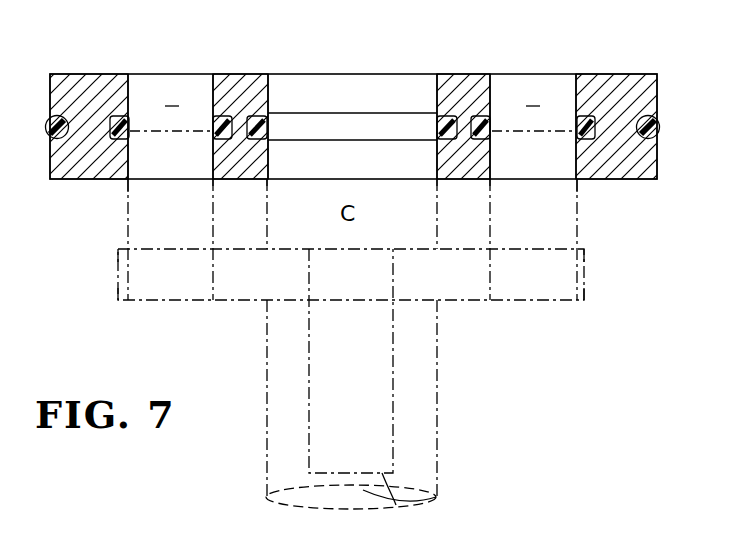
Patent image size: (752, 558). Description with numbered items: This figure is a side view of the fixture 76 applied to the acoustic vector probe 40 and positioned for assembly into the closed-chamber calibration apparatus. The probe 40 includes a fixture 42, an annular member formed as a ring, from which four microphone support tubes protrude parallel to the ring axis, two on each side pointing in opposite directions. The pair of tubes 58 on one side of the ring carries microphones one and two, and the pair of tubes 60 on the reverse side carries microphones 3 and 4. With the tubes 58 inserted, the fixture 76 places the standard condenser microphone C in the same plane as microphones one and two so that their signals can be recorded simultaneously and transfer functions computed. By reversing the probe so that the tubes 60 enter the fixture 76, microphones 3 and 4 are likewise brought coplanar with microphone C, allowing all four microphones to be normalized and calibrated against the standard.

The fixture 76 is at (46, 77).
The pair of tubes 58 is at (128, 192).
The fixture 42 is at (584, 280).
The acoustic vector probe 40 is at (530, 358).
The pair of tubes 60 is at (394, 410).
The microphone 3 is at (378, 504).
The microphone 4 is at (400, 506).